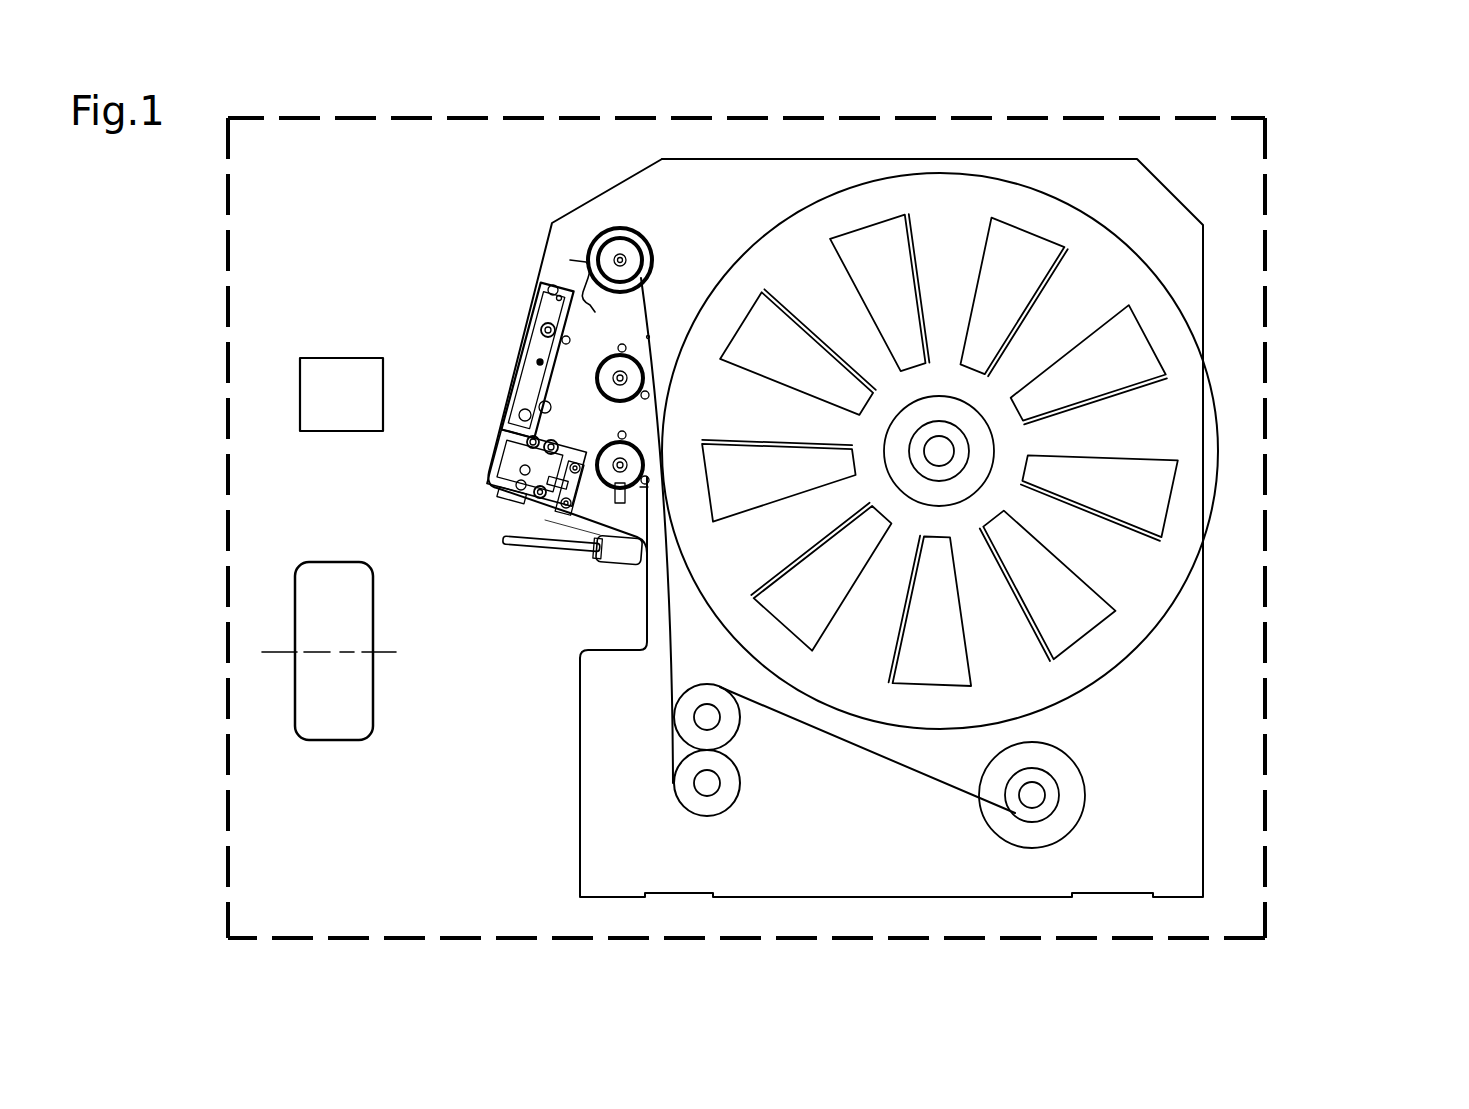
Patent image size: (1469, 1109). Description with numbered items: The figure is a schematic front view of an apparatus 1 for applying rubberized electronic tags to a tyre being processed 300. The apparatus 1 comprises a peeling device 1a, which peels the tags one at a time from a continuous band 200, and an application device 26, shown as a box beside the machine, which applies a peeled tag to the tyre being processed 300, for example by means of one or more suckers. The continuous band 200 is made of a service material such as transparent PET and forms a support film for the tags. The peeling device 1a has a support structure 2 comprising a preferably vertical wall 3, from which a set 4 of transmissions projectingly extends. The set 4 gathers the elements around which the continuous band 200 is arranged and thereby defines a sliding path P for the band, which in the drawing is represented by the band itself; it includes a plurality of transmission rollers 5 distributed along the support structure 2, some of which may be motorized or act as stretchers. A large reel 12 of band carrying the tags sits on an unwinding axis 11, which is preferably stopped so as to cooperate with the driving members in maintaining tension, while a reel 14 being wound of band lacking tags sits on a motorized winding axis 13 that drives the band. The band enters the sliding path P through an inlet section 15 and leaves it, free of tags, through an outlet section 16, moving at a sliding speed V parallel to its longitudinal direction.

The apparatus 1 is at (1313, 222).
The peeling device 1a is at (925, 484).
The support structure 2 is at (925, 484).
The wall 3 is at (1163, 690).
The set of transmissions 4 is at (500, 330).
The transmission roller 5 is at (623, 243).
The unwinding axis 11 is at (939, 451).
The reel 12 is at (1016, 398).
The winding axis 13 is at (1167, 832).
The reel being wound 14 is at (1050, 803).
The inlet section 15 is at (692, 380).
The outlet section 16 is at (905, 792).
The application device 26 is at (320, 406).
The continuous band 200 is at (650, 305).
The tyre being processed 300 is at (337, 687).
The sliding path P is at (648, 337).
The sliding speed V is at (563, 267).